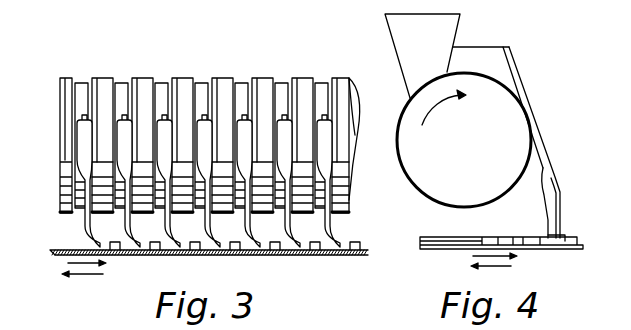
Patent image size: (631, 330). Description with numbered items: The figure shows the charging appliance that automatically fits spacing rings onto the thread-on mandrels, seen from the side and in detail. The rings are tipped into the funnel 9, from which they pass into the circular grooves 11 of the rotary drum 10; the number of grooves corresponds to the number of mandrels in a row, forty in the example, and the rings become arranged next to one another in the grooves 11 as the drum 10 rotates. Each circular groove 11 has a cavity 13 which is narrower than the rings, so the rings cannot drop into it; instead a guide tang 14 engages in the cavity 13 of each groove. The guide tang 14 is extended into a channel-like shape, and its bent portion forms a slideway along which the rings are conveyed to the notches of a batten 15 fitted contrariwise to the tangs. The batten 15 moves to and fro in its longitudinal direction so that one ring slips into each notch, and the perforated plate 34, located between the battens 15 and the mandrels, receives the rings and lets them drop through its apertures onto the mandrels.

In FIG. 4, the funnel 9 is at (396, 48).
In FIG. 3, the rotary drum 10 is at (66, 148).
In FIG. 4, the rotary drum 10 is at (430, 195).
In FIG. 3, the circular grooves 11 is at (122, 74).
In FIG. 3, the cavity 13 is at (241, 82).
In FIG. 3, the guide tang 14 is at (199, 118).
In FIG. 4, the guide tang 14 is at (553, 187).
In FIG. 3, the batten 15 is at (352, 242).
In FIG. 3, the perforated plate 34 is at (61, 252).